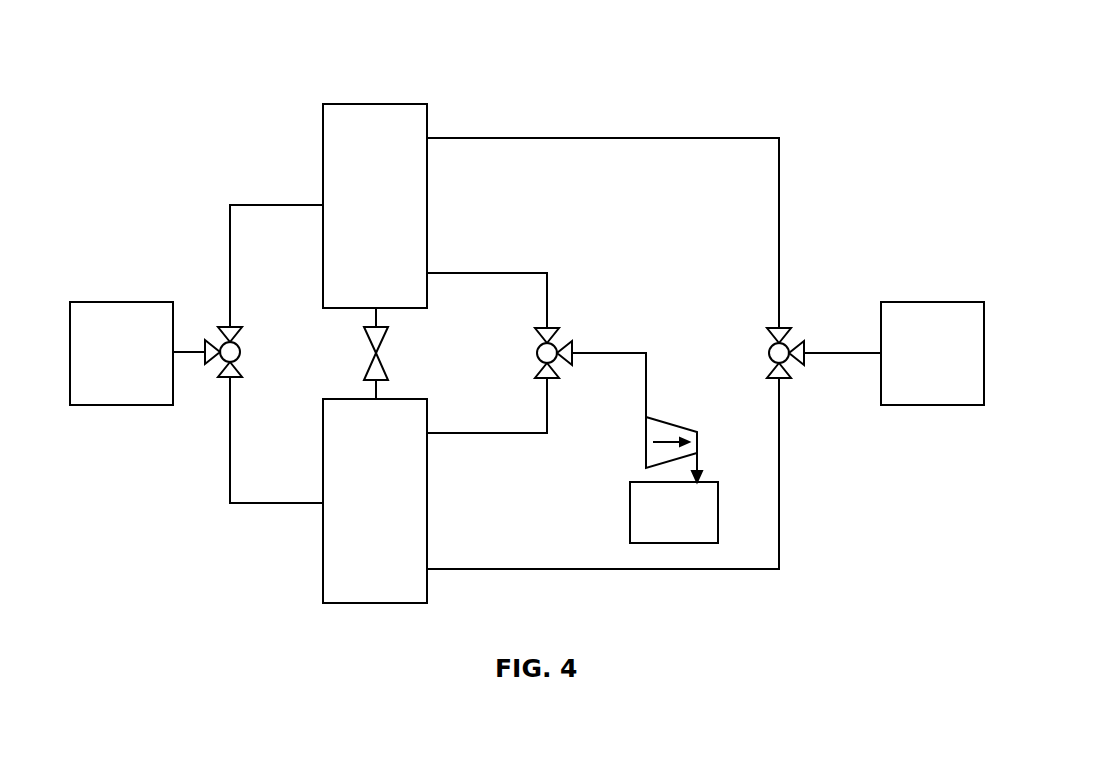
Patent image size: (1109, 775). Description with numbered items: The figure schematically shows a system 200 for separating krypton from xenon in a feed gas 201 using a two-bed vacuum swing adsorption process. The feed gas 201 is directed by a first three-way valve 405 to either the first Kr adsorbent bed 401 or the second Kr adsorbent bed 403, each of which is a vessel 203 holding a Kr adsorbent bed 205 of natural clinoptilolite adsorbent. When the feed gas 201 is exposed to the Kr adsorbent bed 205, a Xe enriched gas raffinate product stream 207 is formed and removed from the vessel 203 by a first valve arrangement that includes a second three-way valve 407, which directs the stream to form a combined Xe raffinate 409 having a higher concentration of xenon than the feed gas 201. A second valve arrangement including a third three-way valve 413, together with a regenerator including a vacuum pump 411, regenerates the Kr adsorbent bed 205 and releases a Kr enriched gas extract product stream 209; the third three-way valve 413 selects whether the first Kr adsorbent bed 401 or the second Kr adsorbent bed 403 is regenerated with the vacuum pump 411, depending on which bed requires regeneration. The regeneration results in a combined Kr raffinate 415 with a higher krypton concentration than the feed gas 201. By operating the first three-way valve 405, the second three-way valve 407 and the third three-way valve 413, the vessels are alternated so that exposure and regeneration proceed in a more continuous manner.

The system 200 is at (236, 53).
The feed gas 201 is at (130, 302).
The vessel 203 is at (372, 336).
The Kr adsorbent bed 205 is at (397, 205).
The Xe enriched gas raffinate product stream 207 is at (690, 138).
The Kr enriched gas extract product stream 209 is at (522, 273).
The first Kr adsorbent bed 401 is at (318, 151).
The second Kr adsorbent bed 403 is at (318, 553).
The first three-way valve 405 is at (244, 350).
The second three-way valve 407 is at (769, 350).
The combined Xe raffinate 409 is at (907, 302).
The vacuum pump 411 is at (652, 453).
The third three-way valve 413 is at (536, 350).
The combined Kr raffinate 415 is at (630, 513).